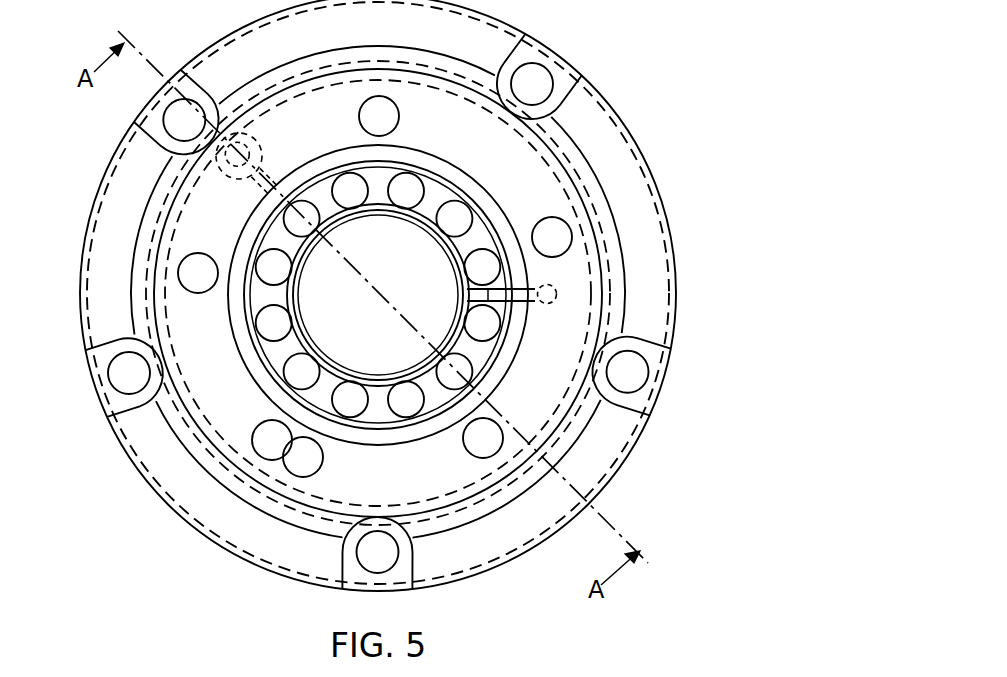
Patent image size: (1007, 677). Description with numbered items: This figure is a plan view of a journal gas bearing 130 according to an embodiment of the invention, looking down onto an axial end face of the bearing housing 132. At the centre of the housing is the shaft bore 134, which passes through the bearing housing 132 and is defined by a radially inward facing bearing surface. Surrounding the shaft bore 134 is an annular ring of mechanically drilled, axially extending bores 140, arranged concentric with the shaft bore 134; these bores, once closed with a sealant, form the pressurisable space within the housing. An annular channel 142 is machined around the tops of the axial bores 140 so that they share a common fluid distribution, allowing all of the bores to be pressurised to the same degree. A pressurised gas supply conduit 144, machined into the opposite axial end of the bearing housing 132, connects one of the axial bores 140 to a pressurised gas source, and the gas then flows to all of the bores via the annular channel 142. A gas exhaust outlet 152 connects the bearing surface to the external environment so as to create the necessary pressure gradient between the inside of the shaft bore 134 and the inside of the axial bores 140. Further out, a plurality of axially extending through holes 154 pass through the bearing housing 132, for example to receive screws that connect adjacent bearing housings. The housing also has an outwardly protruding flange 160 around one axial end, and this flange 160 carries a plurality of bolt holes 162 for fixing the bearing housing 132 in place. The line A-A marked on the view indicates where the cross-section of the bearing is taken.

The gas bearing 130 is at (603, 58).
The bearing housing 132 is at (628, 178).
The shaft bore 134 is at (372, 320).
The axially extending bores 140 is at (442, 217).
The annular channel 142 is at (433, 193).
The pressurised gas supply conduit 144 is at (270, 182).
The gas exhaust outlet 152 is at (489, 303).
The axially extending through holes 154 is at (550, 239).
The flange 160 is at (610, 457).
The bolt holes 162 is at (635, 374).